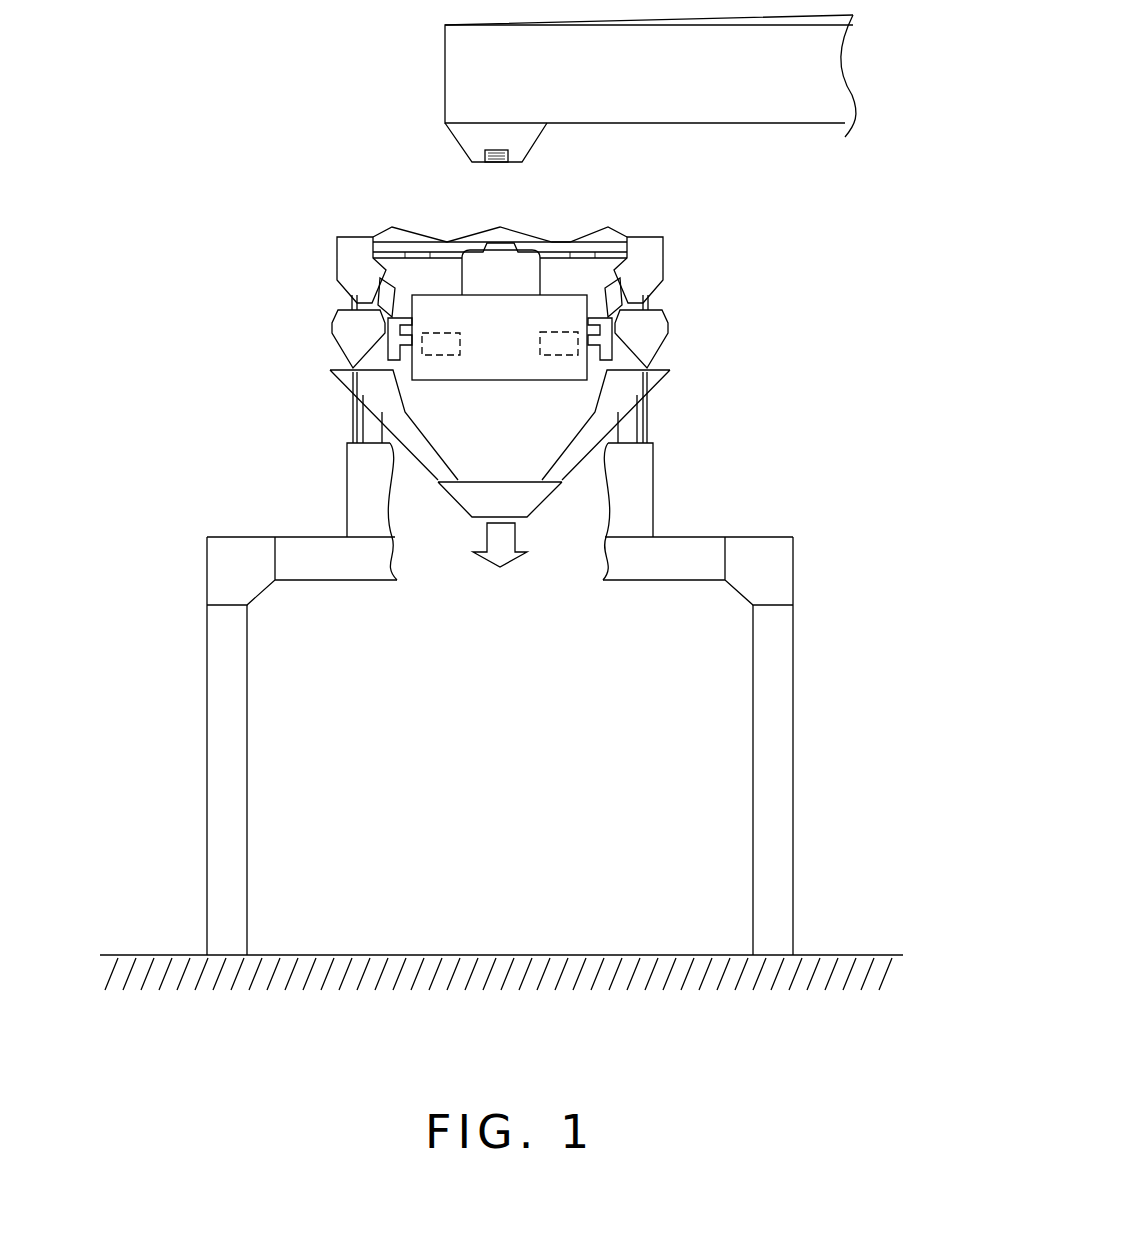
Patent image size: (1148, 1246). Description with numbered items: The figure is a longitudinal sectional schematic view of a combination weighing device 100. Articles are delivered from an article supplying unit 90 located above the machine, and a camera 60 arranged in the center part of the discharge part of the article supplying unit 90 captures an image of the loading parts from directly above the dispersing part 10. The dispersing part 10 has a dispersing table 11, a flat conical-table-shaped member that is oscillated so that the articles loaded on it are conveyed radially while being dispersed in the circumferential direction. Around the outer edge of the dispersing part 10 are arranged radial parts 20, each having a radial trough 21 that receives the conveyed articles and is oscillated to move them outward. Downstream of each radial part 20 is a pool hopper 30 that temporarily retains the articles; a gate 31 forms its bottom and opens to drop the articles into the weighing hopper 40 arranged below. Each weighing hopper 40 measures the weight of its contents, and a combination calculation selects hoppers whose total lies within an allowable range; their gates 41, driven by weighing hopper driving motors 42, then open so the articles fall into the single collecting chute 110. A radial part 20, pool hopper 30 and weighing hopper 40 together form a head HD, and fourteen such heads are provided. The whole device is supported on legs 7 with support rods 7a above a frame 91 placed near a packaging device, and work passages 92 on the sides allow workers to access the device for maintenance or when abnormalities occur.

The combination weighing device 100 is at (212, 118).
The article supplying unit 90 is at (433, 75).
The camera 60 is at (512, 153).
The dispersing part 10 is at (500, 210).
The dispersing table 11 is at (490, 228).
The radial trough 21 is at (388, 232).
The radial part 20 is at (343, 218).
The pool hopper 30 is at (333, 260).
The gate 31 is at (345, 293).
The weighing hopper 40 is at (333, 338).
The gate 41 is at (347, 360).
The weighing hopper driving motor 42 is at (457, 333).
The collecting chute 110 is at (438, 484).
The support rods 7a is at (350, 422).
The legs 7 is at (347, 475).
The work passage 92 is at (282, 530).
The frame 91 is at (257, 737).
The head HD is at (250, 183).